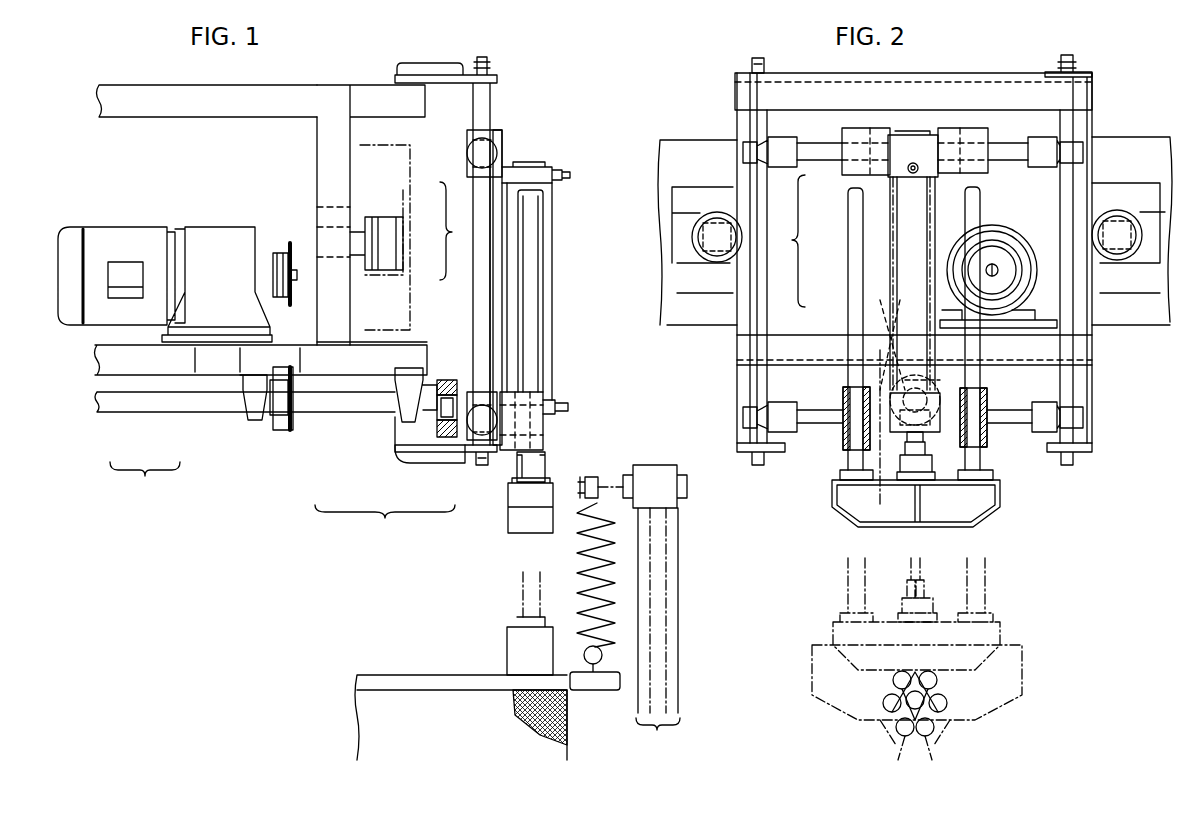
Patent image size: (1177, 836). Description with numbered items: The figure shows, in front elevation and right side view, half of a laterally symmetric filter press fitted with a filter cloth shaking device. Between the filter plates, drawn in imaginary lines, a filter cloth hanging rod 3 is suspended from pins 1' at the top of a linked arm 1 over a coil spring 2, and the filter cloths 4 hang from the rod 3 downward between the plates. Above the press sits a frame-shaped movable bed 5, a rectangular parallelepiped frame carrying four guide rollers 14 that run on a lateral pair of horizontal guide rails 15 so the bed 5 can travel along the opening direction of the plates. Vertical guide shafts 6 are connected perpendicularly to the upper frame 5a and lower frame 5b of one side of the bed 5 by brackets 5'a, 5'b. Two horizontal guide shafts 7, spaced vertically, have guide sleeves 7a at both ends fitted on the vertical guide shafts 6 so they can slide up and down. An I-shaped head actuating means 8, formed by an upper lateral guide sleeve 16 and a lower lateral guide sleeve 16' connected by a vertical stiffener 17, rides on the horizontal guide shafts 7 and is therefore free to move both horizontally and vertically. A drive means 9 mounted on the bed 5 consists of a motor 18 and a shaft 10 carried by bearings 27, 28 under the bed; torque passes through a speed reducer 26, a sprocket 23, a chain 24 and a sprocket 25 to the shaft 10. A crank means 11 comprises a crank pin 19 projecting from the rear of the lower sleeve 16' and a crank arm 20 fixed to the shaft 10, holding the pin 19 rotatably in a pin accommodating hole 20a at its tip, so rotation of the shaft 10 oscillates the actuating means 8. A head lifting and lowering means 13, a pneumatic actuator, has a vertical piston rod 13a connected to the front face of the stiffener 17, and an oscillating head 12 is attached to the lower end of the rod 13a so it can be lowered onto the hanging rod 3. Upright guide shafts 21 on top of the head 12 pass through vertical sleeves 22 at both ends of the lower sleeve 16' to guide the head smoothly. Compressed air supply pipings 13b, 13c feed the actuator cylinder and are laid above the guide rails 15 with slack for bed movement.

In FIG. 1, the linked arm 1 is at (655, 614).
In FIG. 1, the pins 1' is at (605, 460).
In FIG. 1, the coil spring 2 is at (583, 540).
In FIG. 1, the filter cloth hanging rod 3 is at (605, 675).
In FIG. 2, the filter cloth hanging rod 3 is at (945, 700).
In FIG. 1, the filter cloths 4 is at (557, 725).
In FIG. 2, the filter cloths 4 is at (955, 730).
In FIG. 1, the movable bed 5 is at (207, 86).
In FIG. 2, the movable bed 5 is at (945, 250).
In FIG. 1, the upper frame 5a is at (363, 100).
In FIG. 2, the upper frame 5a is at (815, 95).
In FIG. 1, the lower frame 5b is at (345, 380).
In FIG. 2, the lower frame 5b is at (737, 352).
In FIG. 1, the bracket 5'a is at (470, 251).
In FIG. 2, the bracket 5'a is at (1087, 242).
In FIG. 1, the bracket 5'b is at (446, 472).
In FIG. 2, the bracket 5'b is at (931, 460).
In FIG. 1, the vertical guide shafts 6 is at (482, 243).
In FIG. 2, the vertical guide shafts 6 is at (755, 118).
In FIG. 2, the horizontal guide shafts 7 is at (818, 148).
In FIG. 2, the guide sleeves 7a is at (750, 152).
In FIG. 1, the head actuating means 8 is at (432, 231).
In FIG. 2, the head actuating means 8 is at (789, 241).
In FIG. 1, the drive means 9 is at (145, 482).
In FIG. 1, the shaft 10 is at (170, 400).
In FIG. 2, the shaft 10 is at (905, 340).
In FIG. 1, the crank means 11 is at (385, 523).
In FIG. 2, the crank means 11 is at (880, 500).
In FIG. 1, the oscillating head 12 is at (508, 520).
In FIG. 2, the oscillating head 12 is at (1000, 512).
In FIG. 1, the head lifting and lowering means 13 is at (548, 333).
In FIG. 2, the head lifting and lowering means 13 is at (925, 210).
In FIG. 2, the piston rod 13a is at (920, 462).
In FIG. 1, the compressed air supply piping 13b is at (563, 170).
In FIG. 2, the compressed air supply piping 13b is at (913, 163).
In FIG. 1, the compressed air supply piping 13c is at (560, 400).
In FIG. 1, the guide rollers 14 is at (385, 230).
In FIG. 2, the guide rollers 14 is at (692, 237).
In FIG. 1, the horizontal guide rails 15 is at (415, 170).
In FIG. 2, the horizontal guide rails 15 is at (1140, 180).
In FIG. 1, the lateral guide sleeve 16 is at (472, 168).
In FIG. 2, the lateral guide sleeve 16 is at (896, 166).
In FIG. 1, the lateral guide sleeve 16' is at (468, 377).
In FIG. 2, the lateral guide sleeve 16' is at (841, 391).
In FIG. 1, the vertical stiffener 17 is at (492, 270).
In FIG. 2, the vertical stiffener 17 is at (850, 235).
In FIG. 1, the motor 18 is at (127, 318).
In FIG. 2, the motor 18 is at (1010, 232).
In FIG. 1, the crank pin 19 is at (420, 430).
In FIG. 2, the crank pin 19 is at (935, 432).
In FIG. 1, the crank arm 20 is at (447, 407).
In FIG. 1, the pin accommodating hole 20a is at (442, 425).
In FIG. 2, the upright guide shafts 21 is at (848, 470).
In FIG. 1, the vertical sleeves 22 is at (530, 440).
In FIG. 2, the vertical sleeves 22 is at (843, 405).
In FIG. 1, the sprocket 23 is at (290, 245).
In FIG. 2, the sprocket 23 is at (1013, 262).
In FIG. 1, the chain 24 is at (330, 312).
In FIG. 2, the chain 24 is at (985, 325).
In FIG. 1, the sprocket 25 is at (285, 425).
In FIG. 2, the sprocket 25 is at (960, 380).
In FIG. 1, the speed reducer 26 is at (228, 240).
In FIG. 1, the bearing 27 is at (237, 392).
In FIG. 1, the bearing 28 is at (410, 395).